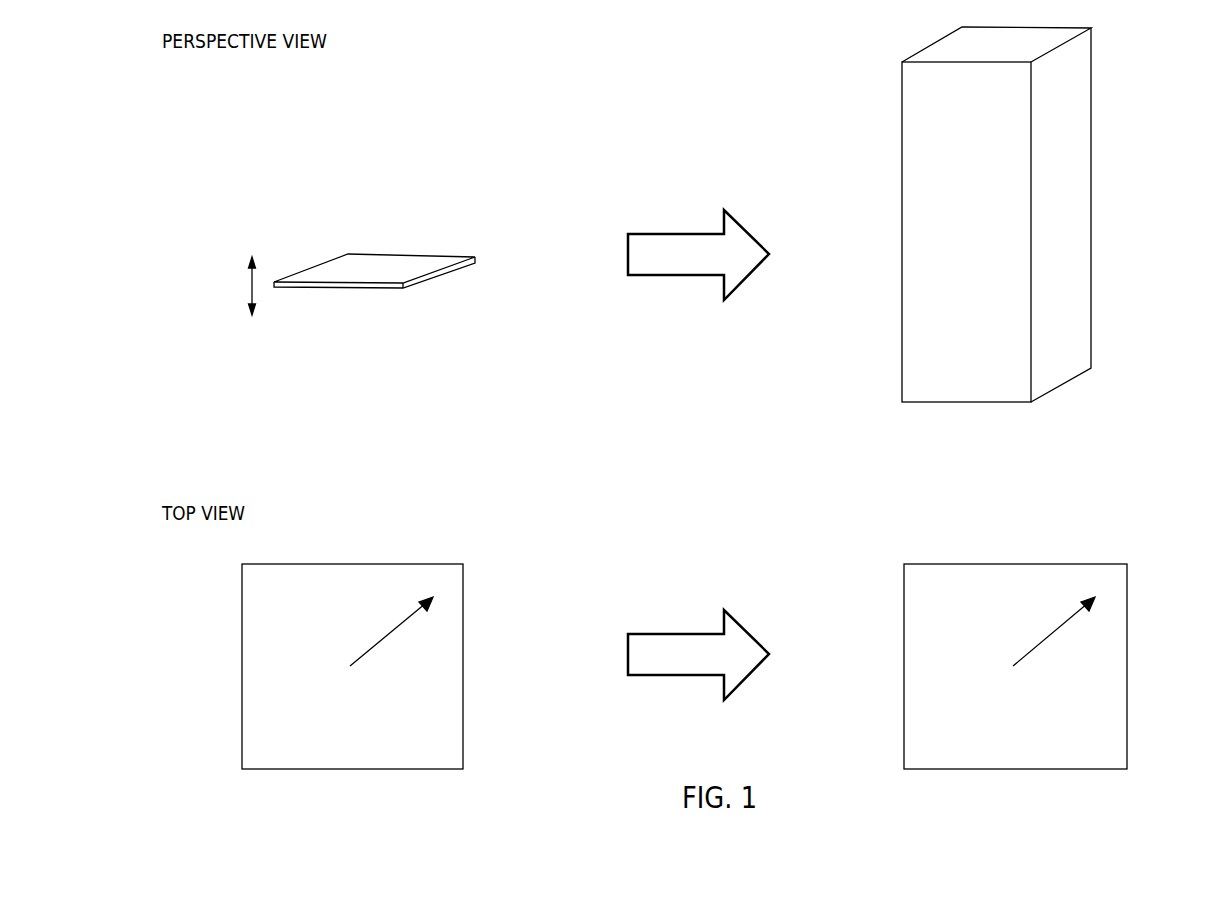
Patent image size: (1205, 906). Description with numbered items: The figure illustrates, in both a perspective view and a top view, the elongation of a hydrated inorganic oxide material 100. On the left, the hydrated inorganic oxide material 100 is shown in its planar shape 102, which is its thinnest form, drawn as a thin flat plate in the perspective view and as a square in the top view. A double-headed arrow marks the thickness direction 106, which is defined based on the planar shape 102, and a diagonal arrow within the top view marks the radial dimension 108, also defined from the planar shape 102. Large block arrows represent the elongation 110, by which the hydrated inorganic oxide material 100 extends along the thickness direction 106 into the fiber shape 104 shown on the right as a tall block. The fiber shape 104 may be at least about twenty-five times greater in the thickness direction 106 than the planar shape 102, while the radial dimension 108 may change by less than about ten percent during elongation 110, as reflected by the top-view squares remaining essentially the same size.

The hydrated inorganic oxide material 100 is at (721, 398).
The planar shape 102 is at (405, 262).
The fiber shape 104 is at (1085, 138).
The thickness direction 106 is at (254, 294).
The radial dimension 108 is at (403, 623).
The elongation 110 is at (698, 455).